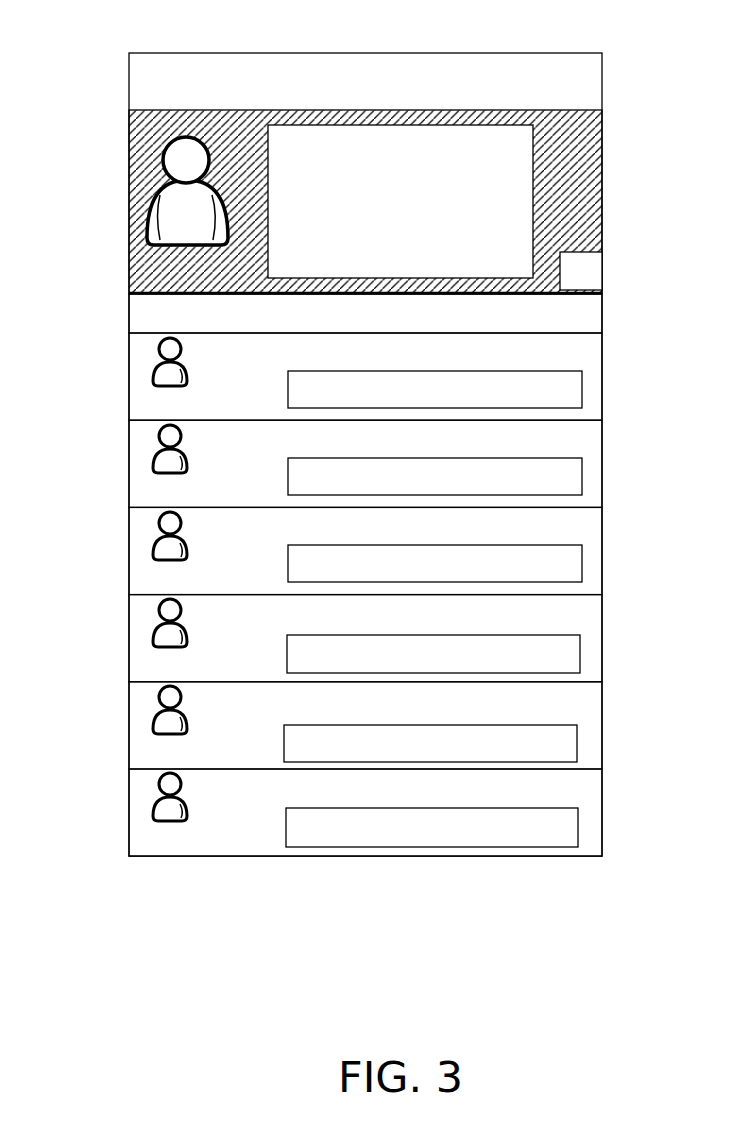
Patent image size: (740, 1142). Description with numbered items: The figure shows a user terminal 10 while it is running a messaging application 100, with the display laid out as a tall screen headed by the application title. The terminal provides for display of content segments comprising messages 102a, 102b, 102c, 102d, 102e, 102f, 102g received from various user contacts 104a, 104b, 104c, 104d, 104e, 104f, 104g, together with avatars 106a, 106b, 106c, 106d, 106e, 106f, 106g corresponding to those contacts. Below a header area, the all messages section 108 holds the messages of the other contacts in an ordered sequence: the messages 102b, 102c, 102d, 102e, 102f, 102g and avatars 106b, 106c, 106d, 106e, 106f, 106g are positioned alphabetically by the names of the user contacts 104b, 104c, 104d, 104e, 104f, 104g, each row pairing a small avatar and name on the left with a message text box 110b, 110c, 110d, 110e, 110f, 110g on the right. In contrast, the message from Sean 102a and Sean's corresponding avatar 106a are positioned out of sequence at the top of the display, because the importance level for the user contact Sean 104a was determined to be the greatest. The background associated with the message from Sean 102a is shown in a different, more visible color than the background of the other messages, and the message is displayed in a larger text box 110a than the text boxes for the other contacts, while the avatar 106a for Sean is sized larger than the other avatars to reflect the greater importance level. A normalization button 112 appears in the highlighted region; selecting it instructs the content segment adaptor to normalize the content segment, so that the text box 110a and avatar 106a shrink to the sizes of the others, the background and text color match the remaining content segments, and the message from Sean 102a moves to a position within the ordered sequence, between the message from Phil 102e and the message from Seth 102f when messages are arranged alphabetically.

The user terminal 10 is at (577, 53).
The messaging application 100 is at (388, 67).
The message from Sean 102a is at (385, 193).
The message from Alon 102b is at (345, 379).
The message from Derek 102c is at (337, 468).
The message from Jason 102d is at (336, 555).
The message from Phil 102e is at (348, 645).
The message from Seth 102f is at (342, 732).
The message from Sofia 102g is at (340, 814).
The user contact Sean 104a is at (165, 270).
The user contact Alon 104b is at (147, 405).
The user contact Derek 104c is at (138, 490).
The user contact Jason 104d is at (142, 580).
The user contact Phil 104e is at (148, 665).
The user contact Seth 104f is at (145, 752).
The user contact Sofia 104g is at (142, 837).
The avatar for Sean 106a is at (145, 203).
The avatar for Alon 106b is at (152, 372).
The avatar for Derek 106c is at (152, 455).
The avatar for Jason 106d is at (154, 542).
The avatar for Phil 106e is at (153, 628).
The avatar for Seth 106f is at (153, 717).
The avatar for Sofia 106g is at (152, 798).
The all messages section 108 is at (138, 318).
The text box for message from Sean 110a is at (535, 183).
The text box for message from Alon 110b is at (582, 387).
The text box for message from Derek 110c is at (582, 474).
The text box for message from Jason 110d is at (582, 561).
The text box for message from Phil 110e is at (582, 655).
The text box for message from Seth 110f is at (577, 743).
The text box for message from Sofia 110g is at (582, 827).
The normalization button 112 is at (597, 273).